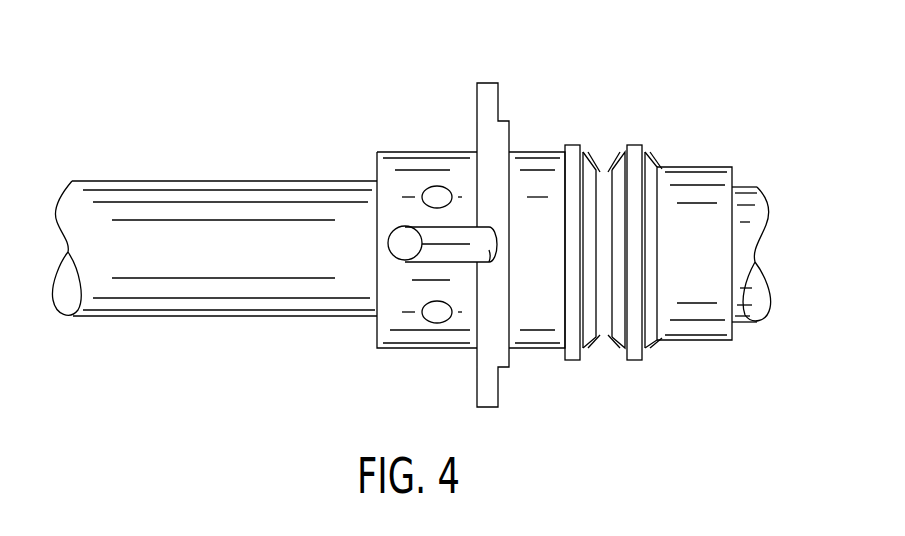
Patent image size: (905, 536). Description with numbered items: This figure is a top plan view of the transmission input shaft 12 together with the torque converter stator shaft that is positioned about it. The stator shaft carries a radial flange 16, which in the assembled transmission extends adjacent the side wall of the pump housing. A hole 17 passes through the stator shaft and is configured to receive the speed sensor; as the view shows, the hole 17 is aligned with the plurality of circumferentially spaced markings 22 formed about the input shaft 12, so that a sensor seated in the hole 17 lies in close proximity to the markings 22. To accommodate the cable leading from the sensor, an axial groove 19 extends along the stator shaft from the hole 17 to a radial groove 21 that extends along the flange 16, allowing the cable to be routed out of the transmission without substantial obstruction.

The input shaft 12 is at (194, 303).
The radial flange 16 is at (492, 100).
The hole 17 is at (398, 265).
The axial groove 19 is at (443, 243).
The radial groove 21 is at (483, 263).
The circumferentially spaced markings 22 is at (398, 240).